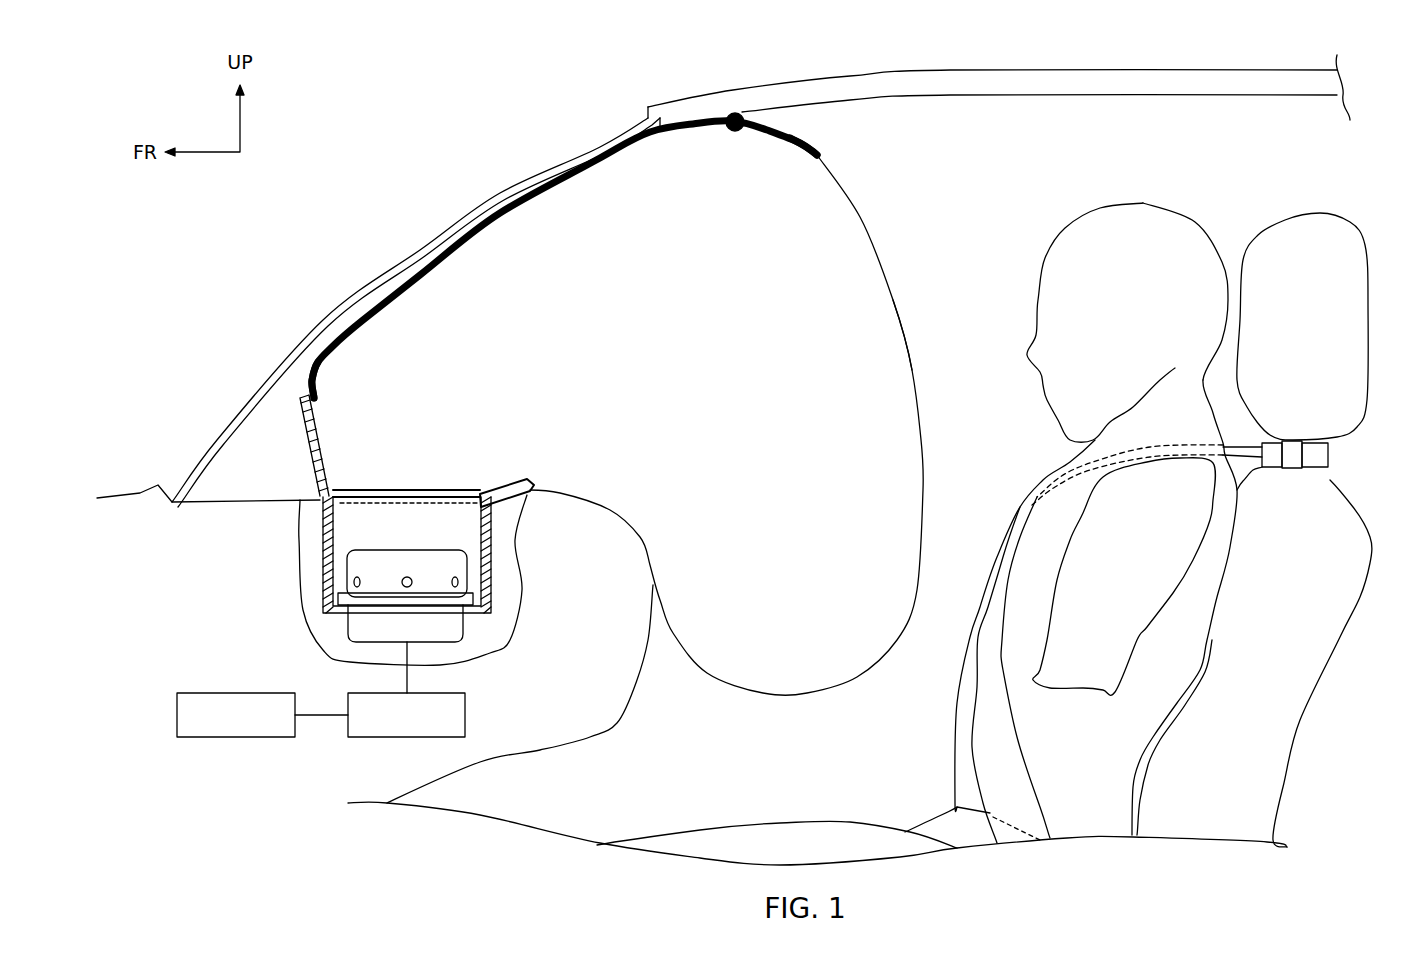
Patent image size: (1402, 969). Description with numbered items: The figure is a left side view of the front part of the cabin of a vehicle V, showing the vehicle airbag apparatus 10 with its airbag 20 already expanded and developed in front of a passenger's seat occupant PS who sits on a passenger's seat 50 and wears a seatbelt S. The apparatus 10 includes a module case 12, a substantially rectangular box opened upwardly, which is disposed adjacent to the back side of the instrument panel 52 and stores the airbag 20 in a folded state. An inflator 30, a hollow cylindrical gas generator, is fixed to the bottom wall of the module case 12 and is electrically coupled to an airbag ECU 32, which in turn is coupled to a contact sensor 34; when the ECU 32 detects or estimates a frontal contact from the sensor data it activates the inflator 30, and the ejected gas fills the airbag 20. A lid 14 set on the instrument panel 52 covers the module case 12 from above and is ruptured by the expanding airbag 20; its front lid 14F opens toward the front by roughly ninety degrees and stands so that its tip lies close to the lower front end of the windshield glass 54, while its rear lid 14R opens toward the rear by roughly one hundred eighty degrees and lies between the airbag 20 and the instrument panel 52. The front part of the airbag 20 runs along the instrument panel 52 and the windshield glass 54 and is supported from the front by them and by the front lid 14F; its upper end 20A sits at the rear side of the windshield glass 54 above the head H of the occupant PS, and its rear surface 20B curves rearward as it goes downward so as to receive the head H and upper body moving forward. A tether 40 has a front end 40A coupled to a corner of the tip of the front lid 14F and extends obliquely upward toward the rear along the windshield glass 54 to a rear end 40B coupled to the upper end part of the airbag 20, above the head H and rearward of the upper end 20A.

The vehicle airbag apparatus 10 is at (282, 266).
The module case 12 is at (322, 566).
The lid 14 is at (389, 501).
The front lid 14F is at (303, 436).
The rear lid 14R is at (457, 490).
The airbag 20 is at (862, 217).
The upper end 20A is at (731, 112).
The rear surface 20B is at (896, 300).
The inflator 30 is at (464, 623).
The airbag ECU 32 is at (362, 737).
The contact sensor 34 is at (227, 737).
The tether 40 is at (498, 212).
The front end 40A is at (306, 386).
The rear end 40B is at (821, 157).
The passenger's seat 50 is at (1322, 212).
The instrument panel 52 is at (618, 727).
The windshield glass 54 is at (382, 277).
The head H is at (1143, 202).
The seatbelt S is at (1012, 512).
The passenger's seat occupant PS is at (958, 705).
The vehicle V is at (506, 104).